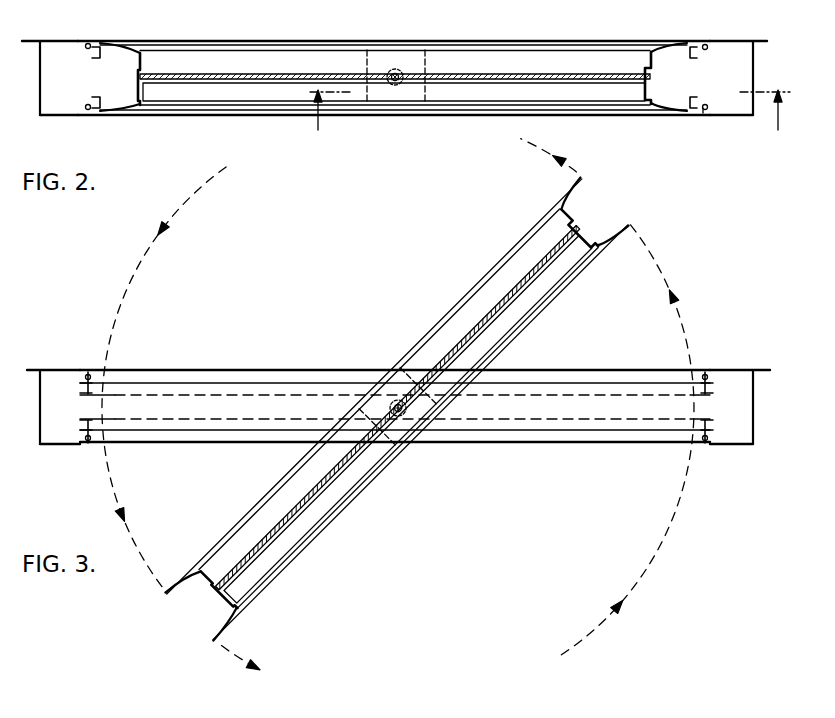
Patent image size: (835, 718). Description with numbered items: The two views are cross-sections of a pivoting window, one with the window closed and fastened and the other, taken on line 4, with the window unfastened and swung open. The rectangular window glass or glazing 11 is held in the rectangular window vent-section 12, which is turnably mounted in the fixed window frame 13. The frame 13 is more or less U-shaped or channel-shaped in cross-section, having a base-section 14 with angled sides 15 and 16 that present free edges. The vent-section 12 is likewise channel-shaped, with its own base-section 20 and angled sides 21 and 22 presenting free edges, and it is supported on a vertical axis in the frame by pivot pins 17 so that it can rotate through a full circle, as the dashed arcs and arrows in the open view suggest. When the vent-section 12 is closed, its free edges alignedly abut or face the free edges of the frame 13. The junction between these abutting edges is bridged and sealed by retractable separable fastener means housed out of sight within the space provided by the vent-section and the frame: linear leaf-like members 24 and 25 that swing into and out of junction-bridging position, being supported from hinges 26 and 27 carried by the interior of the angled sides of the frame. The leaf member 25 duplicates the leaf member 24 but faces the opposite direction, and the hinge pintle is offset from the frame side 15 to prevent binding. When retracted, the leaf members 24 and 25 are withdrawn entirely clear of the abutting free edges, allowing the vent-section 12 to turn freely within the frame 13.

In FIG. 2, the section line 4- 4 is at (550, 125).
In FIG. 2, the window glass 11 is at (250, 73).
In FIG. 3, the window glass 11 is at (318, 505).
In FIG. 2, the window vent-section 12 is at (316, 60).
In FIG. 3, the window vent-section 12 is at (400, 409).
In FIG. 2, the fixed window frame 13 is at (394, 78).
In FIG. 3, the fixed window frame 13 is at (398, 407).
In FIG. 2, the base-section 14 is at (40, 86).
In FIG. 3, the base-section 14 is at (396, 406).
In FIG. 2, the angled side 15 is at (60, 116).
In FIG. 3, the angled side 15 is at (70, 445).
In FIG. 2, the angled side 16 is at (50, 40).
In FIG. 3, the angled side 16 is at (68, 370).
In FIG. 2, the pivot pin 17 is at (400, 68).
In FIG. 3, the pivot pin 17 is at (390, 400).
In FIG. 2, the base-section 20 is at (145, 63).
In FIG. 3, the base-section 20 is at (565, 218).
In FIG. 2, the angled side 21 is at (125, 43).
In FIG. 3, the angled side 21 is at (570, 190).
In FIG. 2, the angled side 22 is at (125, 110).
In FIG. 3, the angled side 22 is at (608, 230).
In FIG. 2, the leaf member 24 is at (95, 98).
In FIG. 2, the leaf member 25 is at (98, 58).
In FIG. 2, the hinge 26 is at (87, 43).
In FIG. 3, the hinge 26 is at (705, 373).
In FIG. 2, the hinge 27 is at (704, 112).